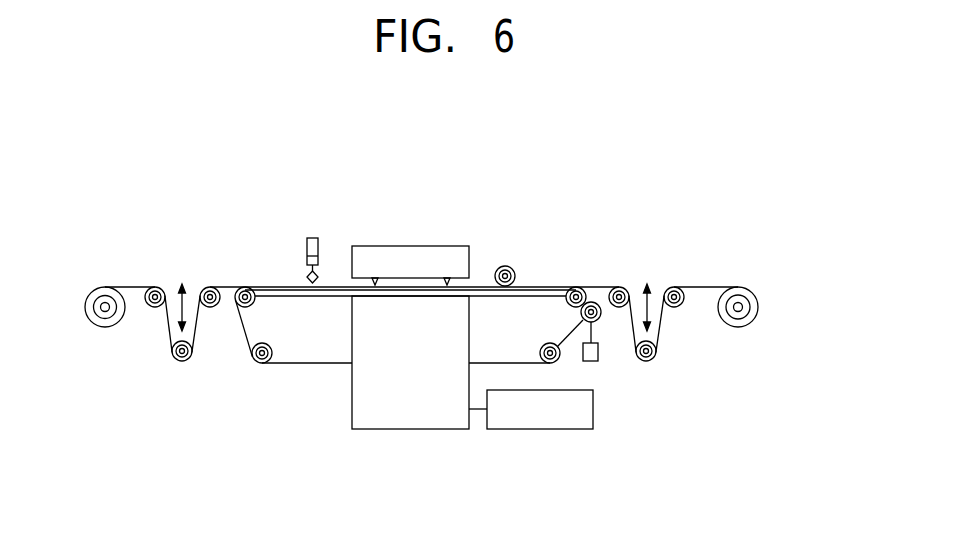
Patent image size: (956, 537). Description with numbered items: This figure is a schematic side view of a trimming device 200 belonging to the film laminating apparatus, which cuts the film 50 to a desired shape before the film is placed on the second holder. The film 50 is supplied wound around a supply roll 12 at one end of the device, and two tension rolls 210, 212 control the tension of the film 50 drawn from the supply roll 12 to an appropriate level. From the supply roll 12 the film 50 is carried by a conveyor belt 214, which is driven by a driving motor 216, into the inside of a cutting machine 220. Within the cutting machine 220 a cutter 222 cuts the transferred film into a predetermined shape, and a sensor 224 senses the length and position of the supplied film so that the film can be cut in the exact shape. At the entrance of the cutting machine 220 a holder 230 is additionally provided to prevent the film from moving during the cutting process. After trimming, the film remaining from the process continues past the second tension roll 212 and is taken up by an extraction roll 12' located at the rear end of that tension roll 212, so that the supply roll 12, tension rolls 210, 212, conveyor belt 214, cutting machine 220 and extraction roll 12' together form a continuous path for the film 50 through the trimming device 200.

The trimming device 200 is at (646, 176).
The film 50 is at (130, 287).
The supply roll 12 is at (105, 336).
The extraction roll 12' is at (738, 336).
The tension roll 210 is at (182, 363).
The tension roll 212 is at (652, 360).
The conveyor belt 214 is at (307, 365).
The driving motor 216 is at (599, 353).
The cutting machine 220 is at (409, 252).
The cutter 222 is at (375, 278).
The sensor 224 is at (313, 238).
The holder 230 is at (505, 265).